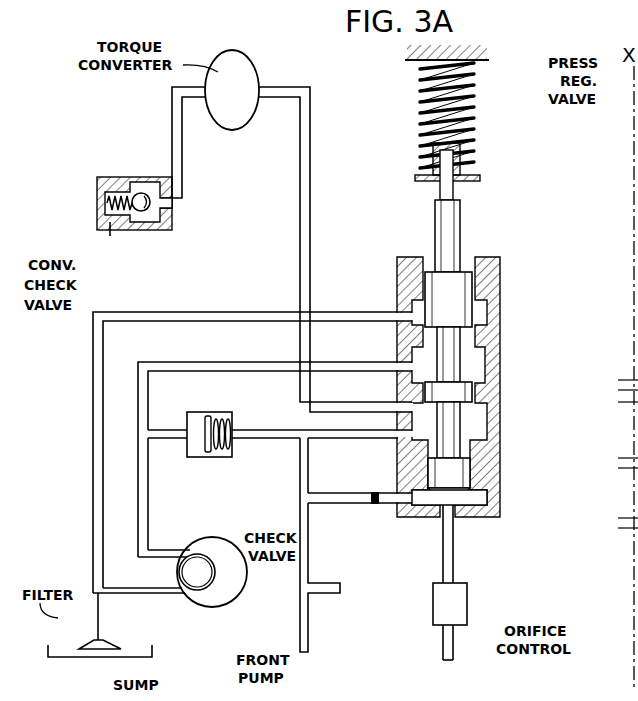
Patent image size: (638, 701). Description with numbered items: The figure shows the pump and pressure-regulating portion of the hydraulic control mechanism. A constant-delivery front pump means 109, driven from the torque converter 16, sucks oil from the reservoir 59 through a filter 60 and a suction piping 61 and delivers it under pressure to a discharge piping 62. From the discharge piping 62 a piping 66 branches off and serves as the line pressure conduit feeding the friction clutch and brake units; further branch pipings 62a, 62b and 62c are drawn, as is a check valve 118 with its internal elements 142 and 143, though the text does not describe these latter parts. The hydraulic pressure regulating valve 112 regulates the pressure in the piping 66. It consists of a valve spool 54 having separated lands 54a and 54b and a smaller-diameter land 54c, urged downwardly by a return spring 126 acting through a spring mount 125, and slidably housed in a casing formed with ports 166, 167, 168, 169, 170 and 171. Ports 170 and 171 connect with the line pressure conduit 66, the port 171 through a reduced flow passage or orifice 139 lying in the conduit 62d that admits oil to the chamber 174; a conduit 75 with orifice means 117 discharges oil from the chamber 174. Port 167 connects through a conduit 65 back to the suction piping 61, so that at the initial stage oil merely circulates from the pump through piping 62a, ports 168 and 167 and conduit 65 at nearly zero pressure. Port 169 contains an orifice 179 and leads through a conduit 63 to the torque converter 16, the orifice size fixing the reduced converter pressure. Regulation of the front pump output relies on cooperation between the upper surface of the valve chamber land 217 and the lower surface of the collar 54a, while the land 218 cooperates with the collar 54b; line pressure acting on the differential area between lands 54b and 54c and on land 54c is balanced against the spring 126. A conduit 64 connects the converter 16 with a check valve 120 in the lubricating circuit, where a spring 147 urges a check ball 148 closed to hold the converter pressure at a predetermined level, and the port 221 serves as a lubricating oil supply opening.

The torque converter 16 is at (225, 48).
The conduit 64 is at (180, 145).
The conduit 63 is at (311, 166).
The check valve 120 is at (97, 201).
The spring 147 is at (117, 196).
The check ball 148 is at (142, 194).
The port 221 is at (110, 237).
The conduit 65 is at (93, 418).
The piping 62a is at (155, 368).
The branch pipe 62b is at (168, 430).
The discharge piping 62 is at (145, 528).
The check valve 118 is at (218, 460).
The check valve plate 142 is at (207, 452).
The check valve spring 143 is at (230, 447).
The front pump means 109 is at (212, 609).
The suction piping 61 is at (150, 595).
The filter 60 is at (93, 640).
The reservoir 59 is at (112, 683).
The line pressure conduit 66 is at (300, 580).
The branch passage 62c is at (360, 465).
The conduit 62d is at (324, 500).
The orifice 139 is at (375, 506).
The hydraulic pressure regulating valve 112 is at (540, 118).
The return spring 126 is at (476, 82).
The spring mount 125 is at (462, 155).
The valve spool 54 is at (452, 228).
The land 54a is at (452, 290).
The land 54b is at (473, 386).
The land 54c is at (452, 473).
The port 167 is at (412, 310).
The port 168 is at (412, 358).
The orifice 179 is at (410, 401).
The port 169 is at (412, 426).
The port 170 is at (402, 436).
The valve chamber land 217 is at (487, 315).
The land 218 is at (484, 396).
The chamber 174 is at (488, 497).
The port 171 is at (408, 508).
The port 166 is at (460, 506).
The conduit 75 is at (454, 568).
The orifice means 117 is at (469, 603).